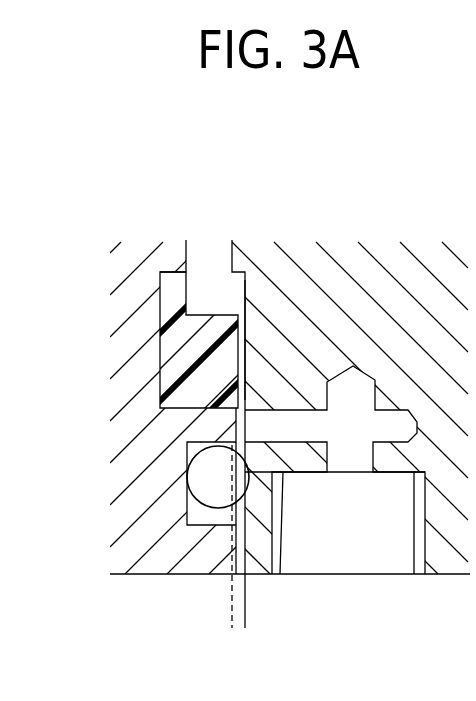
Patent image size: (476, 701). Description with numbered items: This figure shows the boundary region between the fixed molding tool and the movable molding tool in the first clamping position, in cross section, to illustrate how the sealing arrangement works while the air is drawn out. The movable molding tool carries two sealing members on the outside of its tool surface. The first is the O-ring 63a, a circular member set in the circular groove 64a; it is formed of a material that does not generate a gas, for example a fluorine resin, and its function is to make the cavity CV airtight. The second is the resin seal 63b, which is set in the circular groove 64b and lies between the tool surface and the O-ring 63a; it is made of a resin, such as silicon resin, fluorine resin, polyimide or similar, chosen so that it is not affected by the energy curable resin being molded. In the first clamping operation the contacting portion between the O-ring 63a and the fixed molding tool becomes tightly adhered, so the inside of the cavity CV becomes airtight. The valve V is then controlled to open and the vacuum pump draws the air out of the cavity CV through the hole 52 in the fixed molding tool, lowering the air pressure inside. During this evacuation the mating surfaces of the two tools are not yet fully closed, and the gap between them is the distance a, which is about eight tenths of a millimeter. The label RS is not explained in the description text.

The hole 52 is at (247, 425).
The cavity CV is at (235, 262).
The rod side space RS is at (247, 298).
The circular groove 64b is at (183, 267).
The resin seal 63b is at (248, 344).
The circular groove 64a is at (186, 511).
The O-ring 63a is at (208, 476).
The valve V is at (358, 535).
The distance a is at (273, 616).